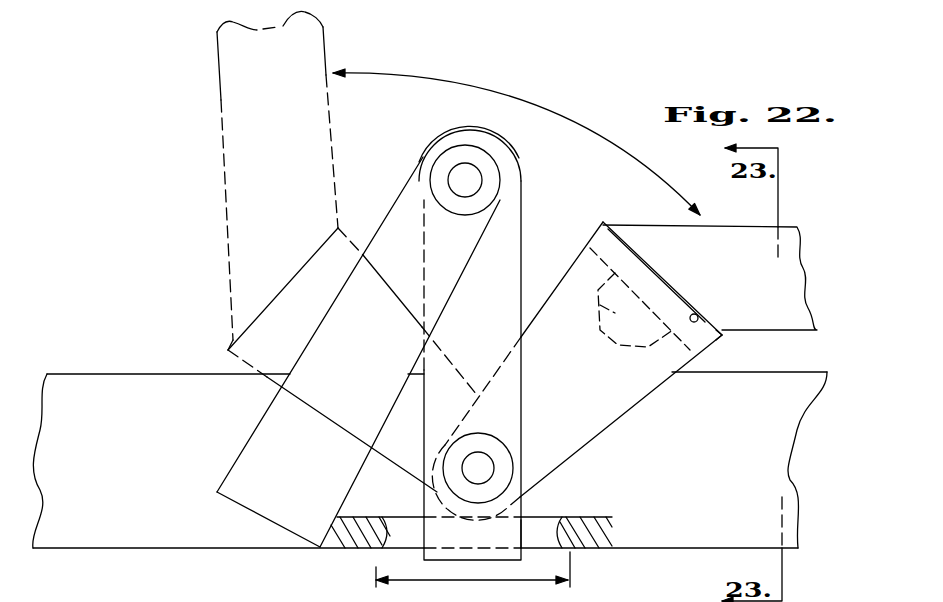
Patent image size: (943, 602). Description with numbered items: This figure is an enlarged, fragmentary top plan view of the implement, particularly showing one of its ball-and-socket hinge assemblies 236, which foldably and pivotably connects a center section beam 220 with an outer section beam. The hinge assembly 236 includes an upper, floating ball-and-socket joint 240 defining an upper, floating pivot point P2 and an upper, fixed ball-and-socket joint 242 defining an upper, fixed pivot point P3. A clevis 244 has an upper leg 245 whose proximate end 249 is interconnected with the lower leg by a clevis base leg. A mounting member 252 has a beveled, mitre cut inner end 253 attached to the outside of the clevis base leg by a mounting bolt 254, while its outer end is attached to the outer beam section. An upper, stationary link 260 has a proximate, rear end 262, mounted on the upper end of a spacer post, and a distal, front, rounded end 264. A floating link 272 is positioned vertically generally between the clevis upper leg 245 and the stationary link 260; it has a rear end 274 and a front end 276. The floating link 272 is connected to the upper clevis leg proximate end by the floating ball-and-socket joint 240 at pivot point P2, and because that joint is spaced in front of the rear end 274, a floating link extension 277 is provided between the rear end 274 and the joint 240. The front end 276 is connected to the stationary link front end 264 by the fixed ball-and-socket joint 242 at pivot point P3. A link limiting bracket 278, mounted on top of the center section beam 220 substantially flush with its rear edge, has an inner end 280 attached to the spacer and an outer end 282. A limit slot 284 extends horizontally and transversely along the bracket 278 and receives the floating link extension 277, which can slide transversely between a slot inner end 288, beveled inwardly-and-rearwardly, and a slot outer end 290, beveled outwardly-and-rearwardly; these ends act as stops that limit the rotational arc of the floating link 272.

The center section beam 220 is at (126, 465).
The ball-and-socket hinge assembly 236 is at (150, 246).
The floating ball-and-socket joint 240 is at (577, 427).
The upper fixed ball-and-socket joint 242 is at (503, 166).
The clevis 244 is at (722, 336).
The clevis upper leg 245 is at (584, 396).
The clevis upper leg proximate end 249 is at (658, 268).
The mounting member 252 is at (799, 293).
The beveled mitre cut inner end 253 is at (698, 317).
The mounting bolt 254 is at (600, 318).
The upper stationary link 260 is at (372, 365).
The stationary link proximate rear end 262 is at (230, 502).
The stationary link distal rounded front end 264 is at (471, 128).
The floating link 272 is at (492, 332).
The floating link rear end 274 is at (443, 560).
The floating link front end 276 is at (500, 138).
The floating link extension 277 is at (483, 543).
The link limiting bracket 278 is at (608, 518).
The link limiting bracket inner end 280 is at (333, 537).
The link limiting bracket outer end 282 is at (613, 535).
The limit slot 284 is at (555, 543).
The slot inner end 288 is at (388, 542).
The slot outer end 290 is at (556, 548).
The upper floating pivot point P2 is at (469, 477).
The upper fixed pivot point P3 is at (456, 189).